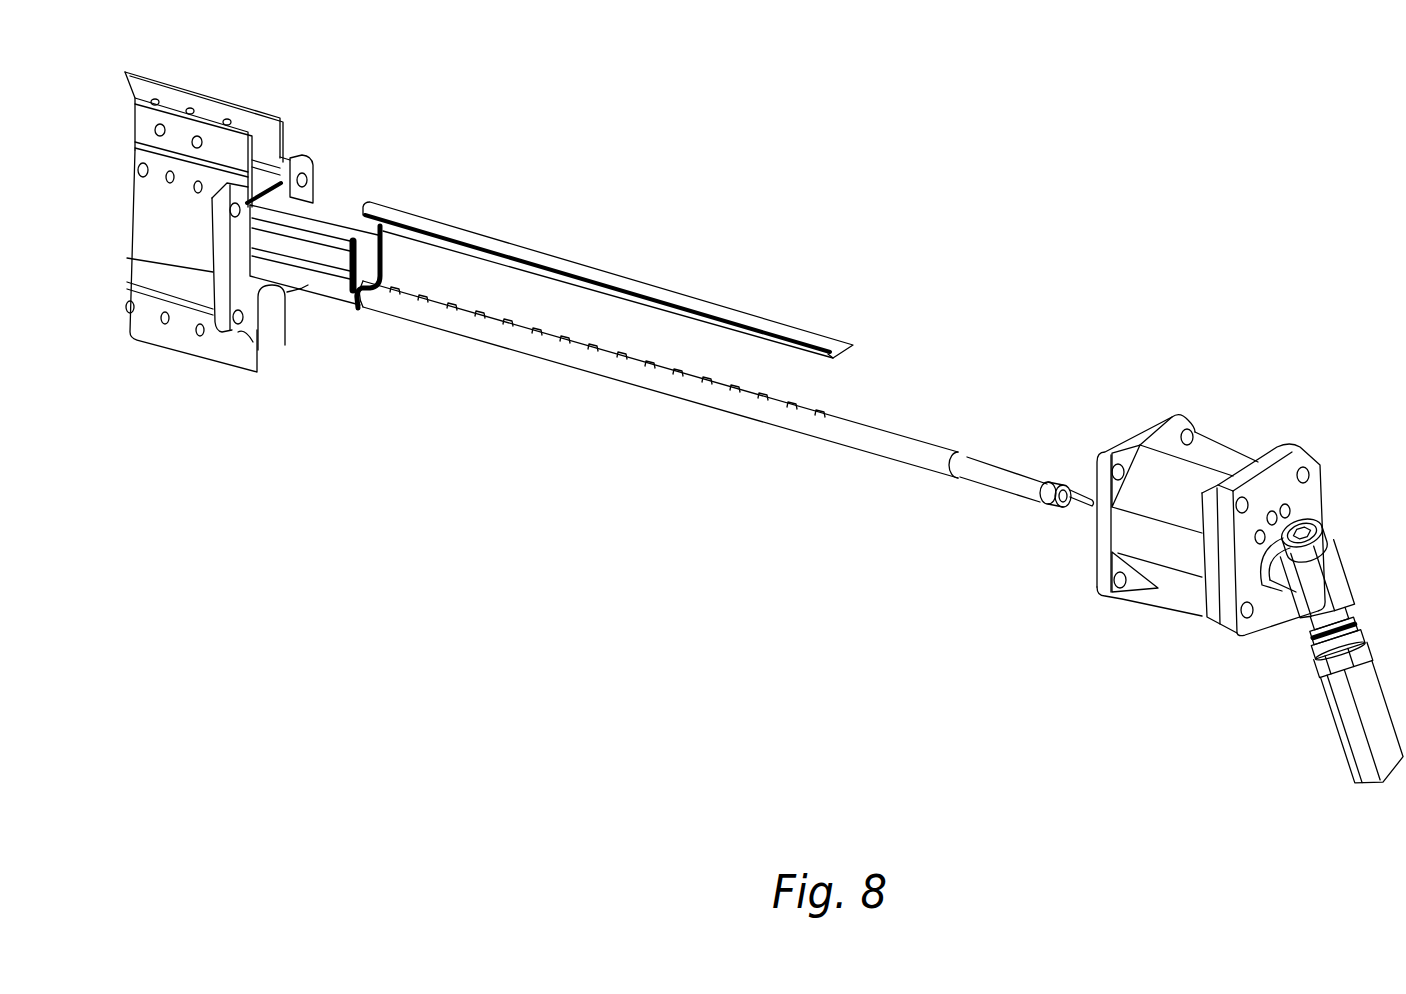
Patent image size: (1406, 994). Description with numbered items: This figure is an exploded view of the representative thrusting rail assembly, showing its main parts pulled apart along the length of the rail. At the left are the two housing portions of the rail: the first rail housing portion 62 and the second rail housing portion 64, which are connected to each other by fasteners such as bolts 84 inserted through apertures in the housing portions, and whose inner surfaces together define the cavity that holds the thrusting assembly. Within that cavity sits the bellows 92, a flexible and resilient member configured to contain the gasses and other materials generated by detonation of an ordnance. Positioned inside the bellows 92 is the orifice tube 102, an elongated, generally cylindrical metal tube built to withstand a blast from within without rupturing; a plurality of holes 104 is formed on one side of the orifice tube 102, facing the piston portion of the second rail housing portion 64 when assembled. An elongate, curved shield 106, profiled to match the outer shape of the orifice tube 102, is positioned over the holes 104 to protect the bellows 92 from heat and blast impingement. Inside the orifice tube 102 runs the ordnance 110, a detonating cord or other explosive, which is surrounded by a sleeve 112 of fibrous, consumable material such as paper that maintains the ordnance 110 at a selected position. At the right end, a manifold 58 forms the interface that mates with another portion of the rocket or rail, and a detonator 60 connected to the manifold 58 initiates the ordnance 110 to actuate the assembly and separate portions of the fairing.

The second rail housing portion 64 is at (205, 78).
The first rail housing portion 62 is at (198, 355).
The bolts 84 is at (132, 190).
The bellows 92 is at (332, 201).
The shields 106 is at (612, 270).
The orifice tube 102 is at (665, 398).
The holes 104 is at (742, 390).
The sleeve 112 is at (980, 482).
The ordnance 110 is at (1072, 509).
The manifold 58 is at (1165, 495).
The detonator 60 is at (1330, 522).